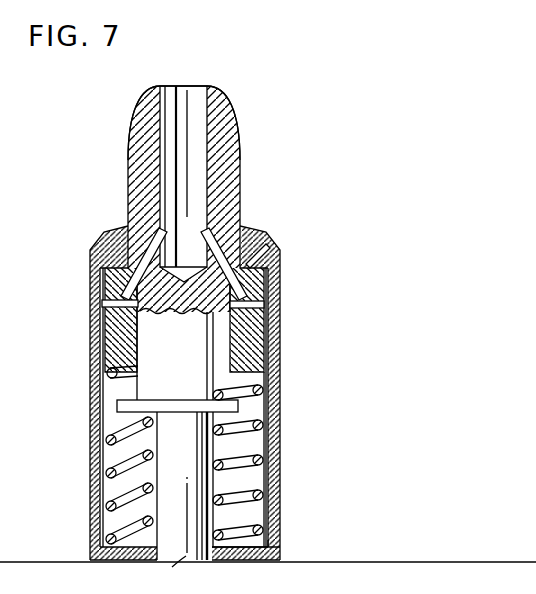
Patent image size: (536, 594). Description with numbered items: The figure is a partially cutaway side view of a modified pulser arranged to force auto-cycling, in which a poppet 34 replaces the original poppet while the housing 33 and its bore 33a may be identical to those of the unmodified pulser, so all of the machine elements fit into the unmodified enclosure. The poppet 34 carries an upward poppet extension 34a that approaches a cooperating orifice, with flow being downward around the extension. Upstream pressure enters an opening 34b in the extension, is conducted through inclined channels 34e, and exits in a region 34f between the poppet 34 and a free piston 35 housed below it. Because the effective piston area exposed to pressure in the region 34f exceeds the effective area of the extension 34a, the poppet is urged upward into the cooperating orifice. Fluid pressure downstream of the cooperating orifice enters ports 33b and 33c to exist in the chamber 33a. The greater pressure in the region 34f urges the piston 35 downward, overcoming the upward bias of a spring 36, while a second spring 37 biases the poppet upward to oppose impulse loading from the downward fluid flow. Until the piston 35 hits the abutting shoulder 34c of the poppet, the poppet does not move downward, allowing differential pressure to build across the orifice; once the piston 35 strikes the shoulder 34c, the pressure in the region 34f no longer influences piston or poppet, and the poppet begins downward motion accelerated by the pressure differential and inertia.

The housing 33 is at (285, 427).
The bore 33a is at (281, 375).
The port 33b is at (270, 249).
The port 33c is at (274, 541).
The poppet 34 is at (165, 323).
The poppet extension 34a is at (233, 111).
The opening 34b is at (182, 165).
The abutting shoulder 34c is at (198, 405).
The channels 34e is at (162, 246).
The region 34f is at (137, 307).
The free piston 35 is at (101, 342).
The spring 36 is at (113, 406).
The spring 37 is at (121, 456).